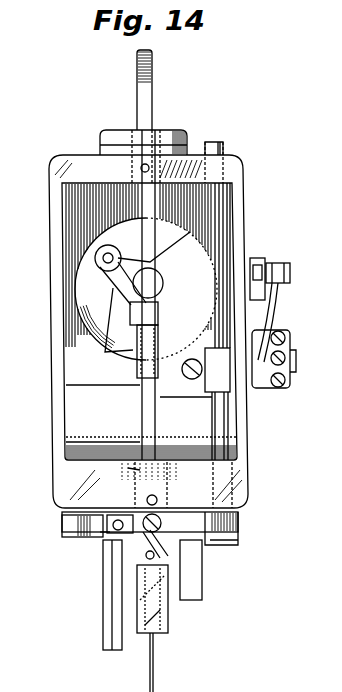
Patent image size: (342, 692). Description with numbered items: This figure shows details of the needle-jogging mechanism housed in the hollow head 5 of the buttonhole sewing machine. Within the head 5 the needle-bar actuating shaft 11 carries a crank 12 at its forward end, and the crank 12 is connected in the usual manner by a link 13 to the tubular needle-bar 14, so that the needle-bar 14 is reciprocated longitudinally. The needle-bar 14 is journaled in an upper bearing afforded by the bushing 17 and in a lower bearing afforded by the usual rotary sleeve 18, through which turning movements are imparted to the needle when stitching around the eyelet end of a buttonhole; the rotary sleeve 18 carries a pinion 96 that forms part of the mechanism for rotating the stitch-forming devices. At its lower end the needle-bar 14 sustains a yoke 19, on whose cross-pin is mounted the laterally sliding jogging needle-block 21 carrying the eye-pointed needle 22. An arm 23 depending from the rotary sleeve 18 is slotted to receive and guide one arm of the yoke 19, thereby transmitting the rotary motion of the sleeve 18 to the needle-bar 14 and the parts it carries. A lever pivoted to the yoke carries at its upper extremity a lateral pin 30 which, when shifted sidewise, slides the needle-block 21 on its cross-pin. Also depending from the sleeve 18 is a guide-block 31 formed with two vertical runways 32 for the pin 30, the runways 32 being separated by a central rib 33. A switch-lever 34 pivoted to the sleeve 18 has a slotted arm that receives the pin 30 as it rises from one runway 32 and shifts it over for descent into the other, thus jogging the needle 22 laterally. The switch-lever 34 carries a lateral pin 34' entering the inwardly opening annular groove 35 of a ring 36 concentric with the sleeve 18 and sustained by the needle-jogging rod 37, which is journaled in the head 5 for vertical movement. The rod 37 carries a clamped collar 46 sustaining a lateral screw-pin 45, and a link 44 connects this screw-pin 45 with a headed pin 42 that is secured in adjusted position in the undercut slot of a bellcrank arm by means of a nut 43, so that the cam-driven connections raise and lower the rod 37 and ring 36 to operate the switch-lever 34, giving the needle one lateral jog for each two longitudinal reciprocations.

The hollow head 5 is at (243, 238).
The bushing 17 is at (132, 130).
The needle-bar actuating shaft 11 is at (160, 285).
The crank 12 is at (110, 247).
The link 13 is at (128, 317).
The tubular needle-bar 14 is at (148, 415).
The collar 46 is at (214, 388).
The needle-jogging rod 37 is at (222, 423).
The rotary sleeve 18 is at (160, 495).
The pinion 96 is at (128, 468).
The headed pin 42 is at (262, 262).
The nut 43 is at (290, 272).
The link 44 is at (273, 320).
The lateral screw-pin 45 is at (290, 350).
The annular groove 35 is at (62, 523).
The lateral pin 34' is at (76, 543).
The switch-lever 34 is at (105, 537).
The guide-block 31 is at (168, 615).
The yoke 19 is at (142, 540).
The lateral pin 30 is at (146, 552).
The jogging needle-block 21 is at (110, 585).
The arm 23 is at (106, 600).
The ring 36 is at (200, 542).
The central rib 33 is at (168, 608).
The vertical runways 32 is at (168, 626).
The eye-pointed needle 22 is at (153, 672).